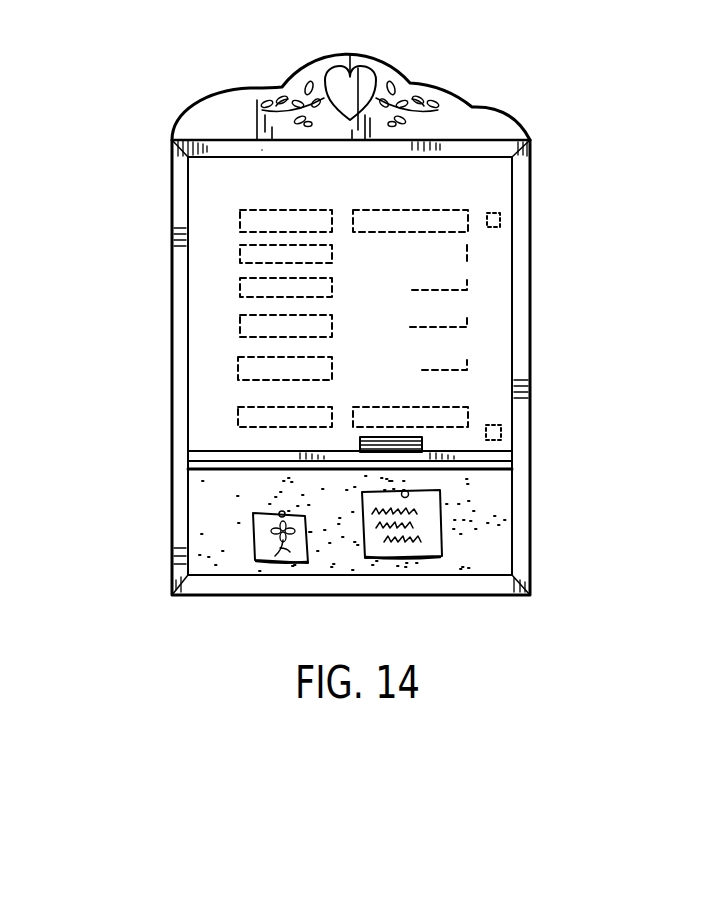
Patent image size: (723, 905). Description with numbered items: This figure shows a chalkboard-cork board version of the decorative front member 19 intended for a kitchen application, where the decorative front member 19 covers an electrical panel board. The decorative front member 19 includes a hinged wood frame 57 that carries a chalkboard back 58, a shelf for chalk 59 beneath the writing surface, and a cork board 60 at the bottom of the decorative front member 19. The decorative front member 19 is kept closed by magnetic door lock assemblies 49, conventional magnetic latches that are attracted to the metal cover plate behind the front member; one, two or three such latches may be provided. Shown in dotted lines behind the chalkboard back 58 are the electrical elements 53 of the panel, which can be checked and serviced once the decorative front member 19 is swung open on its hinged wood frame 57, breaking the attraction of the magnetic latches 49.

The decorative front member 19 is at (390, 311).
The magnetic door lock assembly 49 is at (500, 220).
The electrical elements 53 is at (240, 252).
The hinged wood frame 57 is at (168, 265).
The chalkboard back 58 is at (208, 222).
The shelf for chalk 59 is at (190, 464).
The cork board 60 is at (483, 540).